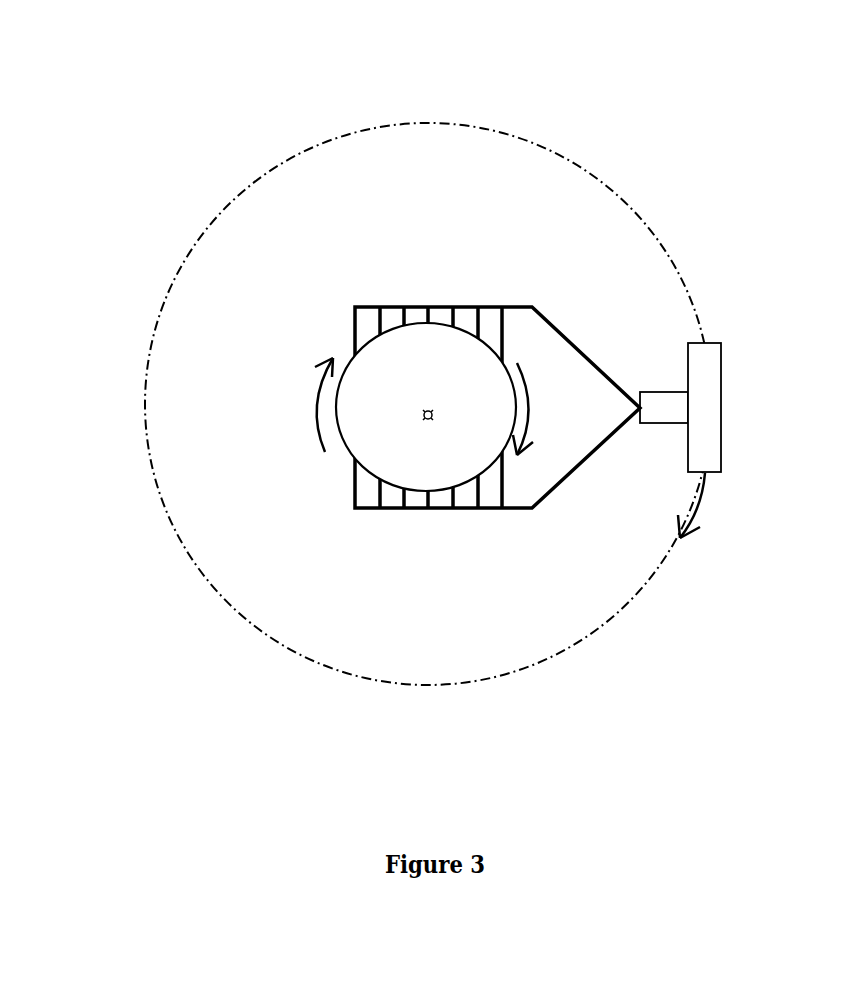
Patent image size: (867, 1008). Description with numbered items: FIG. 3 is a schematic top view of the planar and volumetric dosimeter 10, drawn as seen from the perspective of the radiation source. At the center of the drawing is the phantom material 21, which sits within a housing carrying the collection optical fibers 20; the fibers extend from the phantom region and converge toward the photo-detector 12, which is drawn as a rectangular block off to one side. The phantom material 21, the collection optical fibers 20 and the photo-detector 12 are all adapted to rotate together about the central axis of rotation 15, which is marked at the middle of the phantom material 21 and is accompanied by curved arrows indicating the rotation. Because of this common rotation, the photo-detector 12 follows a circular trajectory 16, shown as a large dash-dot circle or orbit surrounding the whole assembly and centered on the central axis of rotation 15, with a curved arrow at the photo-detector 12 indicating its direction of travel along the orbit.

The planar and volumetric dosimeter 10 is at (712, 148).
The photo-detector 12 is at (712, 410).
The central axis of rotation 15 is at (425, 418).
The circular trajectory 16 is at (152, 342).
The collection optical fibers 20 is at (578, 467).
The phantom material 21 is at (378, 383).